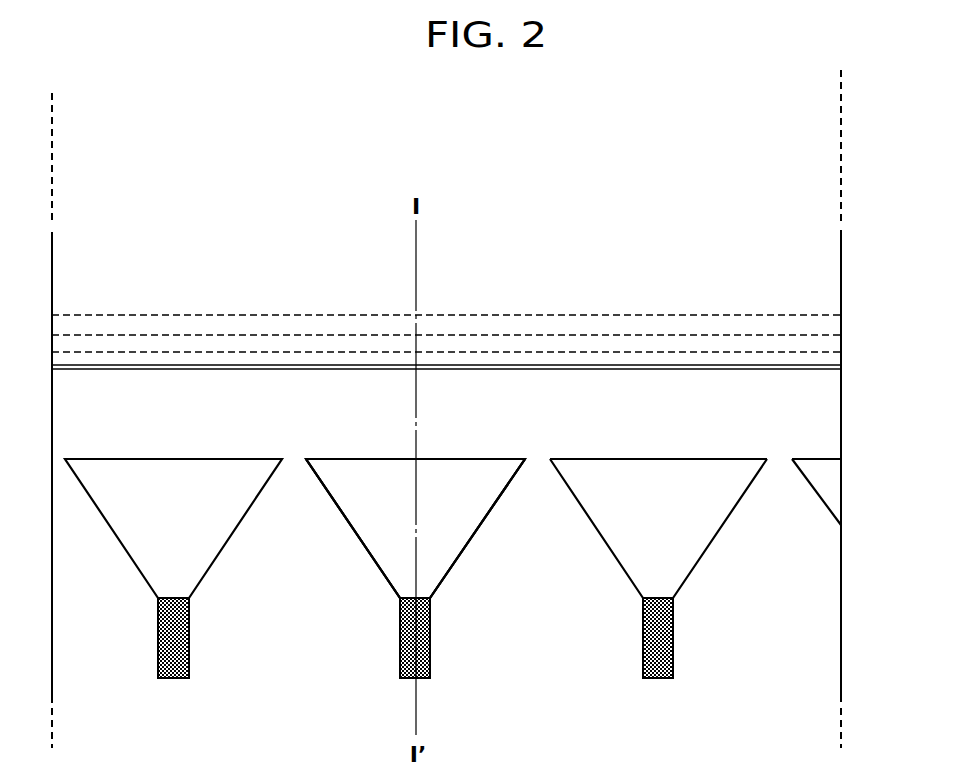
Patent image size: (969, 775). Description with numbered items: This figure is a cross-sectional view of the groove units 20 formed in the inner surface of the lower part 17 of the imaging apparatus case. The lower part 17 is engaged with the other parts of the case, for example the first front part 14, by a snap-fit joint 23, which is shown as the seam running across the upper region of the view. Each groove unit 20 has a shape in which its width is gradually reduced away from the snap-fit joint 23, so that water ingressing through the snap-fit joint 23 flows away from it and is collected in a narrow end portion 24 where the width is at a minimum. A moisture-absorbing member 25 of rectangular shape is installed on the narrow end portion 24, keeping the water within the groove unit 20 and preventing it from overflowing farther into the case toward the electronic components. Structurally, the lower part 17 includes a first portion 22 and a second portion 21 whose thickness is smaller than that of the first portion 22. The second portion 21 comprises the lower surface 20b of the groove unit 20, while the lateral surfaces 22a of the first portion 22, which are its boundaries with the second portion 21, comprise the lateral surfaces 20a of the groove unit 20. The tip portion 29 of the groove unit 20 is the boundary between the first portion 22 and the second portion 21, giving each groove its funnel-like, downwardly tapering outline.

The first front part 14 is at (842, 257).
The lower part 17 is at (842, 447).
The groove unit 20 is at (658, 536).
The lateral surfaces of the groove unit 20a is at (415, 528).
The lower surface of the groove unit 20b is at (370, 518).
The second portion 21 is at (670, 546).
The first portion 22 is at (427, 544).
The lateral surfaces of the first portion 22a is at (485, 517).
The snap-fit joint 23 is at (701, 315).
The narrow end portion 24 is at (415, 660).
The moisture-absorbing member 25 is at (432, 637).
The tip portion 29 is at (703, 458).